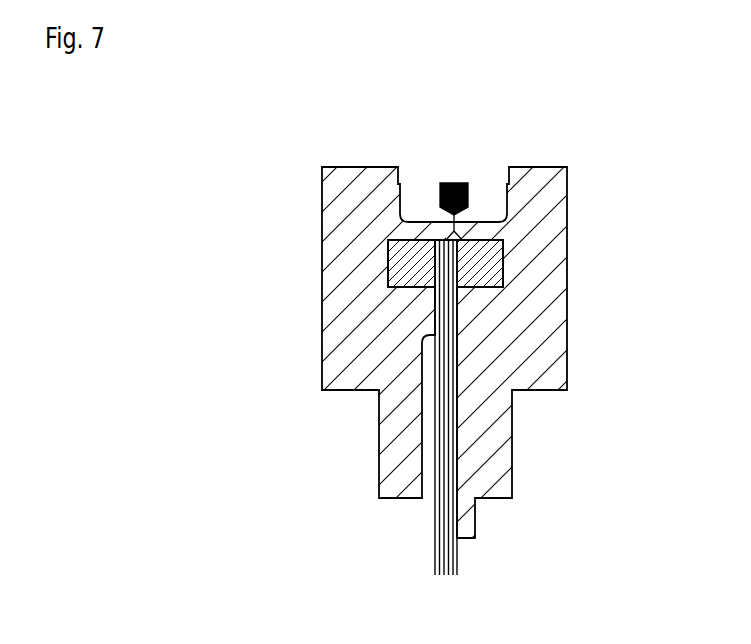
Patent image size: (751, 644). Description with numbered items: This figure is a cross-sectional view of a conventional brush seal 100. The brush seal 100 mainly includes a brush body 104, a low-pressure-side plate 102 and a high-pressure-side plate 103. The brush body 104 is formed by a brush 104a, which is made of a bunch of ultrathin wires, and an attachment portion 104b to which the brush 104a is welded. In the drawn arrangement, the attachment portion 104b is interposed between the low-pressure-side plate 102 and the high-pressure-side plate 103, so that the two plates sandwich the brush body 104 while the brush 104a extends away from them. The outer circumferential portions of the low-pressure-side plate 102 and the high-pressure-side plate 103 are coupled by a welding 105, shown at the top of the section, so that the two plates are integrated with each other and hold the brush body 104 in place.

The brush seal 100 is at (615, 200).
The low-pressure-side plate 102 is at (558, 327).
The high-pressure-side plate 103 is at (333, 282).
The brush body 104 is at (505, 263).
The brush 104a is at (447, 435).
The attachment portion 104b is at (487, 252).
The welding 105 is at (452, 182).